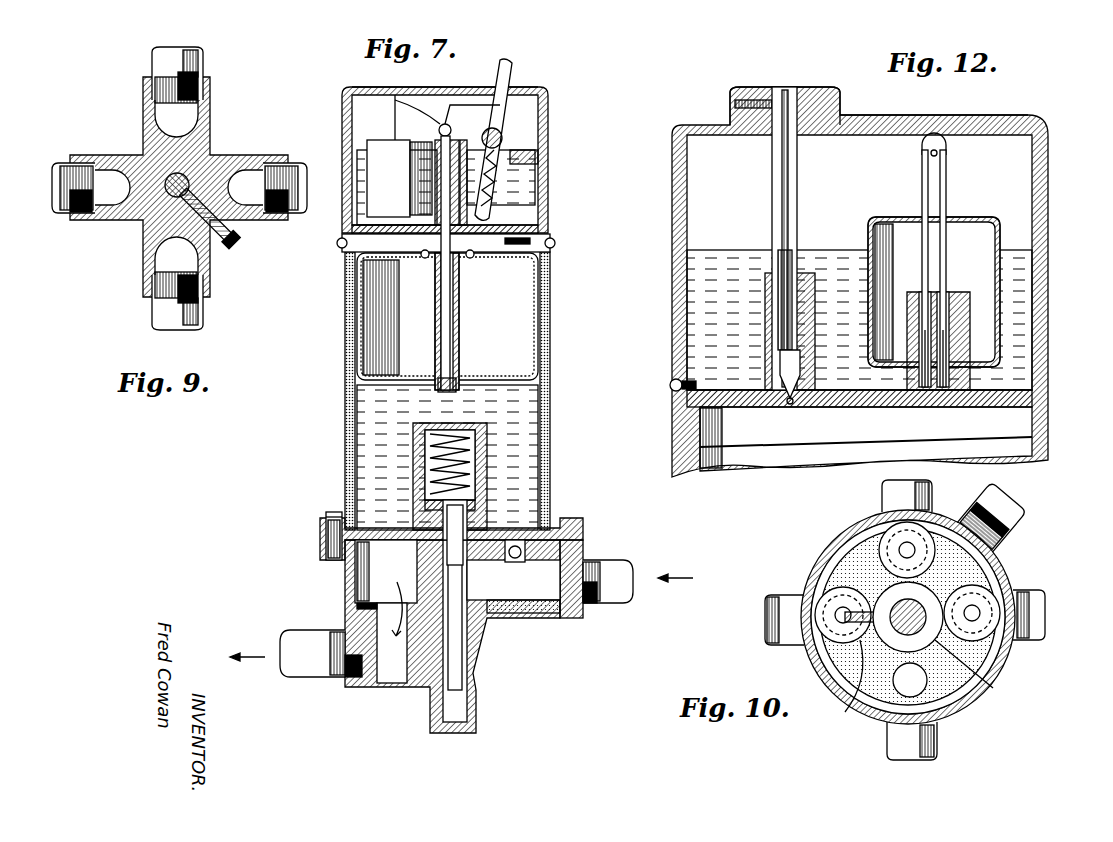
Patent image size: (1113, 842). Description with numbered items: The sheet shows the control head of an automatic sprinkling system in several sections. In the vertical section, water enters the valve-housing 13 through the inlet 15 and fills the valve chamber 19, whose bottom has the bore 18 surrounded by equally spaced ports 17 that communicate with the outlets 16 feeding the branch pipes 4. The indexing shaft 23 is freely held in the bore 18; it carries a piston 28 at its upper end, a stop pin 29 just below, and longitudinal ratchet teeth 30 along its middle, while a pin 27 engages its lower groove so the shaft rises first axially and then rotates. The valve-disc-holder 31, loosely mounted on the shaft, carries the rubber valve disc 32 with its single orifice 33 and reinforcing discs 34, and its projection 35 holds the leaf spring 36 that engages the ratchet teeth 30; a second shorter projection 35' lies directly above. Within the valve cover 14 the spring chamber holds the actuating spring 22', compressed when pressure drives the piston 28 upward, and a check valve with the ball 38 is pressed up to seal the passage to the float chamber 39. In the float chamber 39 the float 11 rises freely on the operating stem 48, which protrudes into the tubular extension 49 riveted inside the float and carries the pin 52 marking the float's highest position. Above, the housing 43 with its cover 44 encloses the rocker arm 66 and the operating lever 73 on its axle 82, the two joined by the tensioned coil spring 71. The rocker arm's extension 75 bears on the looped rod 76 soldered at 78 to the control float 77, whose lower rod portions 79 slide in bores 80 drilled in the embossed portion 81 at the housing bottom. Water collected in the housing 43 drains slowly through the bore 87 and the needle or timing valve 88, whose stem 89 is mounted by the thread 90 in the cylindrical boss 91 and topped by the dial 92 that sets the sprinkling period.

In FIG. 9, the branch pipe 4 is at (200, 58).
In FIG. 7, the branch pipe 4 is at (310, 680).
In FIG. 10, the branch pipe 4 is at (785, 600).
In FIG. 9, the outlet 16 is at (245, 178).
In FIG. 7, the outlet 16 is at (396, 668).
In FIG. 9, the indexing shaft 23 is at (168, 176).
In FIG. 7, the indexing shaft 23 is at (452, 636).
In FIG. 9, the pin 27 is at (165, 225).
In FIG. 7, the cover 44 is at (420, 92).
In FIG. 12, the cover 44 is at (870, 118).
In FIG. 7, the operating lever 73 is at (510, 62).
In FIG. 7, the axle 82 is at (500, 132).
In FIG. 7, the housing 43 is at (548, 142).
In FIG. 12, the housing 43 is at (672, 215).
In FIG. 7, the rocker arm 66 is at (540, 160).
In FIG. 7, the coil spring 71 is at (492, 176).
In FIG. 7, the control float 77 is at (367, 178).
In FIG. 12, the control float 77 is at (1000, 228).
In FIG. 7, the pin 52 is at (458, 244).
In FIG. 7, the tubular extension 49 is at (462, 284).
In FIG. 7, the float 11 is at (530, 262).
In FIG. 7, the operating stem 48 is at (452, 321).
In FIG. 7, the actuating spring 22' is at (392, 476).
In FIG. 7, the float chamber 39 is at (447, 457).
In FIG. 7, the piston 28 is at (480, 512).
In FIG. 7, the stop pin 29 is at (470, 528).
In FIG. 7, the ball 38 is at (522, 540).
In FIG. 7, the valve cover 14 is at (345, 530).
In FIG. 7, the valve chamber 19 is at (386, 571).
In FIG. 7, the valve-housing 13 is at (345, 572).
In FIG. 7, the port 17 is at (372, 618).
In FIG. 7, the second shorter projection 35' is at (513, 580).
In FIG. 7, the valve disc 32 is at (520, 612).
In FIG. 10, the valve disc 32 is at (858, 542).
In FIG. 7, the inlet 15 is at (571, 618).
In FIG. 7, the bore 18 is at (462, 683).
In FIG. 12, the dial 92 is at (800, 86).
In FIG. 12, the extension 75 is at (938, 135).
In FIG. 12, the needle valve stem 89 is at (772, 184).
In FIG. 12, the soldered joint 78 is at (920, 215).
In FIG. 12, the looped rod 76 is at (947, 188).
In FIG. 12, the embossed portion 81 is at (955, 292).
In FIG. 12, the lower portions of rod 79 is at (948, 329).
In FIG. 12, the bore 80 is at (958, 390).
In FIG. 12, the bore 87 is at (772, 395).
In FIG. 12, the needle or timing valve 88 is at (794, 402).
In FIG. 12, the thread 90 is at (775, 322).
In FIG. 12, the cylindrical boss 91 is at (780, 285).
In FIG. 10, the valve-disc-holder 31 is at (905, 610).
In FIG. 10, the projection 35 is at (832, 631).
In FIG. 10, the reinforcing disc 34 is at (985, 640).
In FIG. 10, the ratchet teeth 30 is at (993, 688).
In FIG. 10, the leaf spring 36 is at (870, 690).
In FIG. 10, the orifice 33 is at (898, 690).